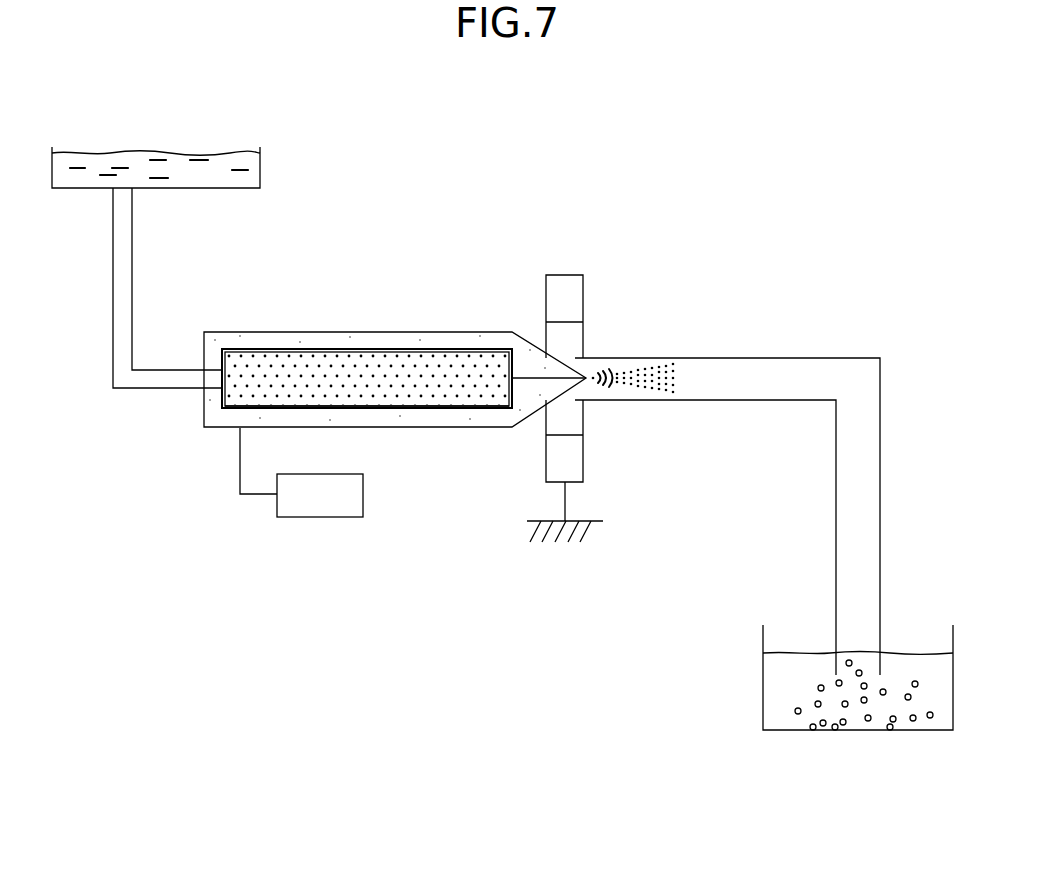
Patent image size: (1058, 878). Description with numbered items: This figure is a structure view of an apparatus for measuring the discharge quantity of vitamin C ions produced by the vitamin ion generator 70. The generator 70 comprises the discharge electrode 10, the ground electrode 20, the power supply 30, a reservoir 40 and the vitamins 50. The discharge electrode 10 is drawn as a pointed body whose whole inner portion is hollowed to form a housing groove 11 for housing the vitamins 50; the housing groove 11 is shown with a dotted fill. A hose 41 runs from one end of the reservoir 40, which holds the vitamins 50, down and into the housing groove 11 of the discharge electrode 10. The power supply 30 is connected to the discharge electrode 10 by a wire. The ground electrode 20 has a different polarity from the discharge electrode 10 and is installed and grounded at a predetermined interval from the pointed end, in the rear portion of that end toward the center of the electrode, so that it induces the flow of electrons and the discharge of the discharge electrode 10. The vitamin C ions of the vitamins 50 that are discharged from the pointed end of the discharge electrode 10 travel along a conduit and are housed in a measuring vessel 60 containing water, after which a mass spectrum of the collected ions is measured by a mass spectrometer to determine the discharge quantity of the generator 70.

The discharge electrode 10 is at (447, 307).
The housing groove 11 is at (347, 350).
The ground electrode 20 is at (565, 275).
The power supply 30 is at (297, 517).
The reservoir 40 is at (260, 165).
The hose 41 is at (132, 262).
The vitamins 50 is at (233, 395).
The measuring vessel 60 is at (783, 698).
The vitamin ion generator 70 is at (478, 505).